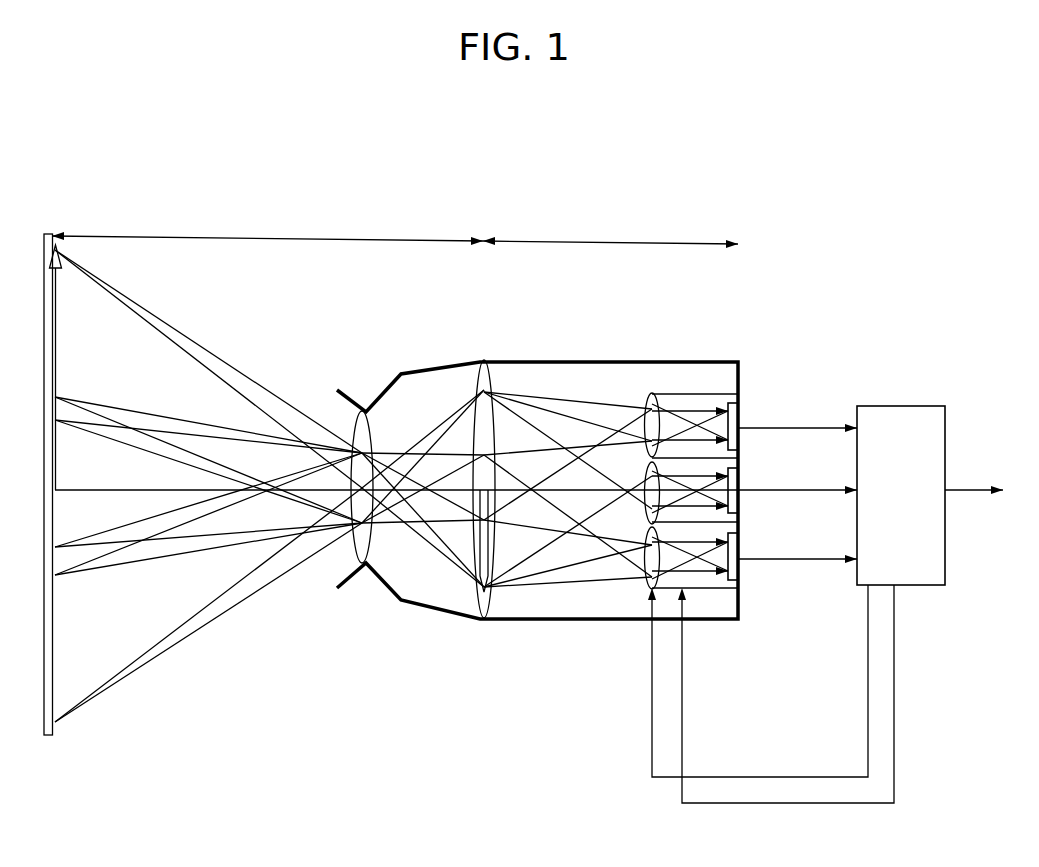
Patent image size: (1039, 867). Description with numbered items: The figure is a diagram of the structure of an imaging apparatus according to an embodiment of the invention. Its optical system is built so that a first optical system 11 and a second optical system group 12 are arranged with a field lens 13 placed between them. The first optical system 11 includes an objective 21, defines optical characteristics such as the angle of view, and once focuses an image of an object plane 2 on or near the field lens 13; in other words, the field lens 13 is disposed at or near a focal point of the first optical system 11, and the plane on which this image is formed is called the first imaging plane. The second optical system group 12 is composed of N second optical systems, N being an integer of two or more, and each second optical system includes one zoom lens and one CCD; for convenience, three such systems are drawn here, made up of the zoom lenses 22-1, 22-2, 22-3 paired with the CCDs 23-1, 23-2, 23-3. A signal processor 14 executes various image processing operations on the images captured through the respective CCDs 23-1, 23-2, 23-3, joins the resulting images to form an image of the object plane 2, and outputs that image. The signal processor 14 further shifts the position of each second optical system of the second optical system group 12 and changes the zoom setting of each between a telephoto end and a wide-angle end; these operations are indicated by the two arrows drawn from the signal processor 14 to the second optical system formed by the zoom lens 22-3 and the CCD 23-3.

The object plane 2 is at (52, 628).
The first optical system 11 is at (270, 238).
The second optical system group 12 is at (612, 242).
The field lens 13 is at (480, 602).
The signal processor 14 is at (885, 406).
The objective 21 is at (352, 550).
The zoom lens 22-1 is at (648, 400).
The zoom lens 22-2 is at (648, 466).
The zoom lens 22-3 is at (648, 532).
The CCD 23-1 is at (740, 440).
The CCD 23-2 is at (740, 505).
The CCD 23-3 is at (740, 570).